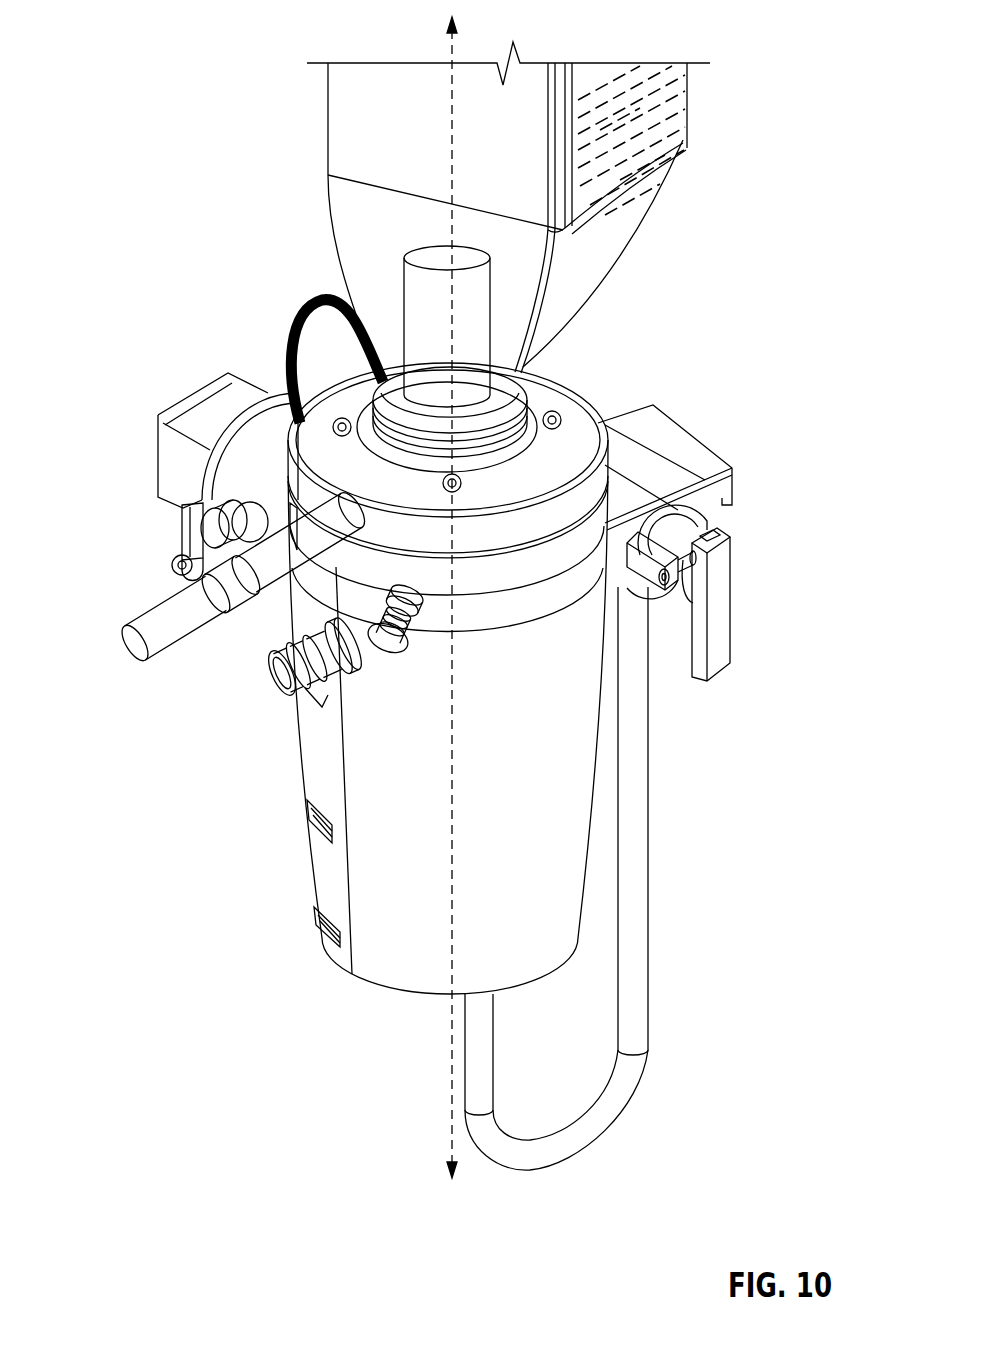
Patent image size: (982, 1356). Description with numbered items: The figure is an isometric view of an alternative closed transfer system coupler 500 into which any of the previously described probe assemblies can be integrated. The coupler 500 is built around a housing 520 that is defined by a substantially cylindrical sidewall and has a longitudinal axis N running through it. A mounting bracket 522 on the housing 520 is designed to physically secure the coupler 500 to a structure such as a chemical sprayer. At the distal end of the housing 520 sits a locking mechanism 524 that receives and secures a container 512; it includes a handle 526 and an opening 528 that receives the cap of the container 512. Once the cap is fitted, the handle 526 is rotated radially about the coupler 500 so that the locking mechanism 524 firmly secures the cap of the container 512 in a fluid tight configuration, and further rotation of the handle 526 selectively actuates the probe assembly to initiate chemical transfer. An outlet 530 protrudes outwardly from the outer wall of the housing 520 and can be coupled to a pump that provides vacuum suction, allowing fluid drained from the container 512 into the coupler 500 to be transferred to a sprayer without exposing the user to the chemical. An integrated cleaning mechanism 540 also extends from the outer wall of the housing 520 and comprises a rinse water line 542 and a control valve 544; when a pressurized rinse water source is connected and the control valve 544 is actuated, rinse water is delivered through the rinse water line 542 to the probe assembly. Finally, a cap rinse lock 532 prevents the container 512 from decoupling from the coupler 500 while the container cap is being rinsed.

The coupler 500 is at (320, 1004).
The container 512 is at (668, 117).
The housing 520 is at (305, 830).
The mounting bracket 522 is at (203, 395).
The locking mechanism 524 is at (256, 598).
The handle 526 is at (128, 642).
The opening 528 is at (565, 393).
The outlet 530 is at (265, 685).
The cap rinse lock 532 is at (388, 640).
The cleaning mechanism 540 is at (728, 416).
The rinse water line 542 is at (648, 990).
The control valve 544 is at (723, 630).